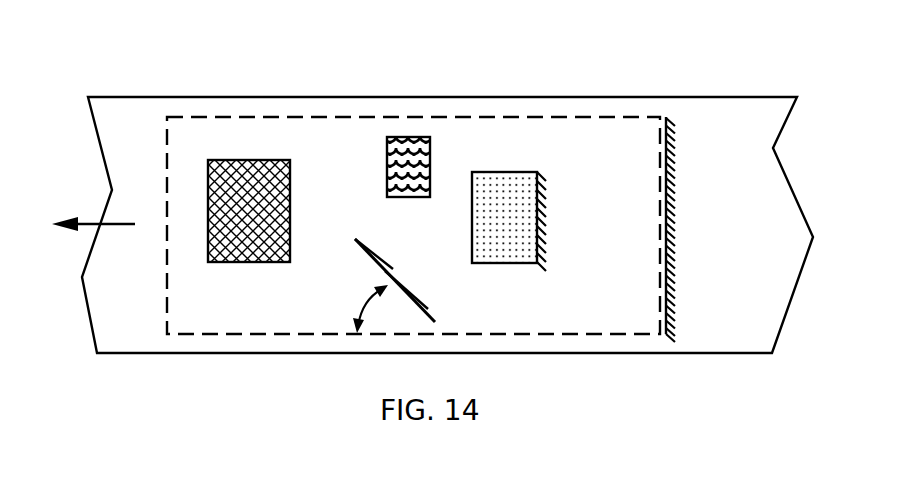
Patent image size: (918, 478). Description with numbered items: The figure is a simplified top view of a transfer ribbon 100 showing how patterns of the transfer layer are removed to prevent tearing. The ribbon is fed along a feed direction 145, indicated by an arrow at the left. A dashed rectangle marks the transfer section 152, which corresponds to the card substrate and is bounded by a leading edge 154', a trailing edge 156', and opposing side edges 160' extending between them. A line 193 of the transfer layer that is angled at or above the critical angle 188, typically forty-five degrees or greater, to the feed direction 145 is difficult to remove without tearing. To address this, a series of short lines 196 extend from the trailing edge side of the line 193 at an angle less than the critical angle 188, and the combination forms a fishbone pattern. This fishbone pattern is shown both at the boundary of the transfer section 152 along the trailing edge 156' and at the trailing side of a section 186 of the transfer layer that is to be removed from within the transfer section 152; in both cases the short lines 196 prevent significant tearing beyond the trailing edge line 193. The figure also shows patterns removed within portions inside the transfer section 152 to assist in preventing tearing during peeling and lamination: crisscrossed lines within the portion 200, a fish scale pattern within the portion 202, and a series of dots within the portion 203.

The transfer ribbon 100 is at (737, 105).
The feed direction 145 is at (80, 222).
The transfer section 152 is at (244, 128).
The leading edge 154' is at (102, 144).
The trailing edge 156' is at (624, 258).
The side edges 160' is at (413, 226).
The section of transfer layer 186 is at (475, 222).
The critical angle 188 is at (366, 300).
The line 193 is at (362, 252).
The short lines 196 is at (386, 262).
The portion 200 is at (246, 263).
The portion 202 is at (388, 158).
The portion 203 is at (503, 178).